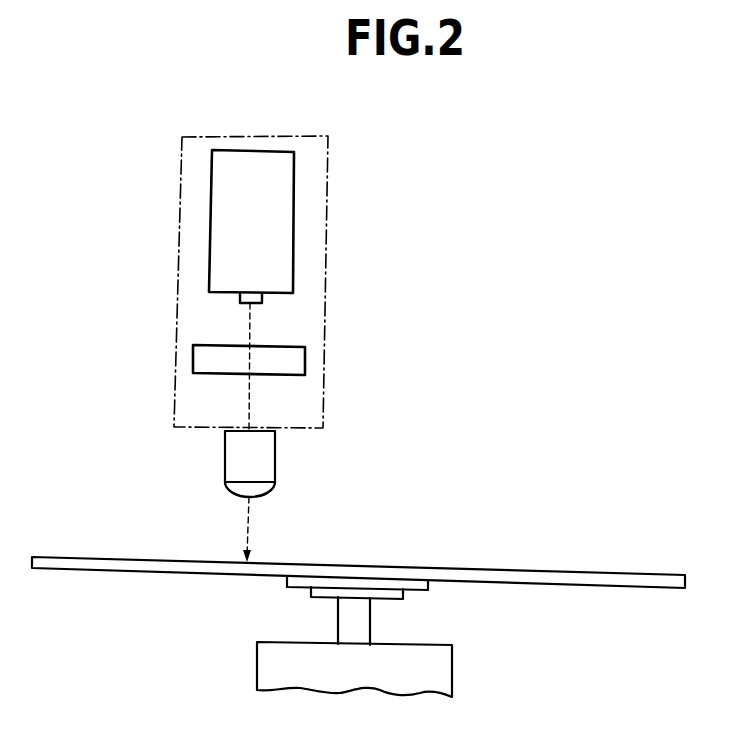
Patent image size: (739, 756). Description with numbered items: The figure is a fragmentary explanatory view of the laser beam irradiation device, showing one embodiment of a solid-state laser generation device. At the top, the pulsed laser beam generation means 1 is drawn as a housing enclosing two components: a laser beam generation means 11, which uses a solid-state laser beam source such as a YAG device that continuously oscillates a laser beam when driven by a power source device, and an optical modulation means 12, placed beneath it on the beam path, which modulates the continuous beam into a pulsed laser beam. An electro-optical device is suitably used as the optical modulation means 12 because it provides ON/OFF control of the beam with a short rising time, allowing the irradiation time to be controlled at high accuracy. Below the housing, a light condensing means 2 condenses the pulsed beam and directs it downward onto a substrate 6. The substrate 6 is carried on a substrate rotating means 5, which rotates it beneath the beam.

The pulsed laser beam generation means 1 is at (328, 168).
The laser beam generation means 11 is at (294, 246).
The optical modulation means 12 is at (305, 362).
The light condensing means 2 is at (275, 463).
The substrate 6 is at (587, 578).
The substrate rotating means 5 is at (452, 665).